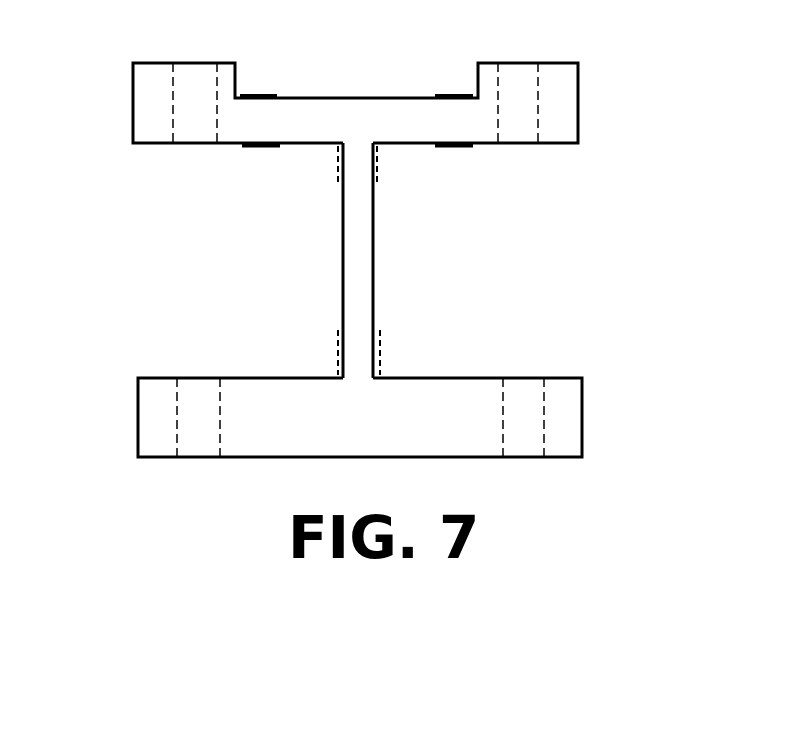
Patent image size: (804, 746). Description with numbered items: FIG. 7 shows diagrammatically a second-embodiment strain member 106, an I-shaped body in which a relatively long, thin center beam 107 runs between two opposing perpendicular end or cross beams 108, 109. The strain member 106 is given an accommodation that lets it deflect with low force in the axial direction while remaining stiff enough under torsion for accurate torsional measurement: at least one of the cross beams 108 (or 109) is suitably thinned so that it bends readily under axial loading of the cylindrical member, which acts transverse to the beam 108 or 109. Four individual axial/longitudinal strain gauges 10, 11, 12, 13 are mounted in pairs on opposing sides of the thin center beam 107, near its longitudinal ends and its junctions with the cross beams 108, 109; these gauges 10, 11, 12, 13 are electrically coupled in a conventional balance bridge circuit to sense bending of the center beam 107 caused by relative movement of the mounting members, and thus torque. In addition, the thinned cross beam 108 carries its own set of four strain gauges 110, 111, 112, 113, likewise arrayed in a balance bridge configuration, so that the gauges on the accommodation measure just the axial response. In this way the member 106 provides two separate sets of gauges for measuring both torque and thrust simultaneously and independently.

The strain member 106 is at (302, 229).
The center beam 107 is at (356, 270).
The cross beam 108 is at (145, 85).
The cross beam 109 is at (268, 400).
The strain gauge 110 is at (263, 150).
The strain gauge 111 is at (260, 95).
The strain gauge 112 is at (460, 95).
The strain gauge 113 is at (462, 148).
The strain gauge 10 is at (338, 164).
The strain gauge 11 is at (378, 164).
The strain gauge 12 is at (337, 350).
The strain gauge 13 is at (383, 350).